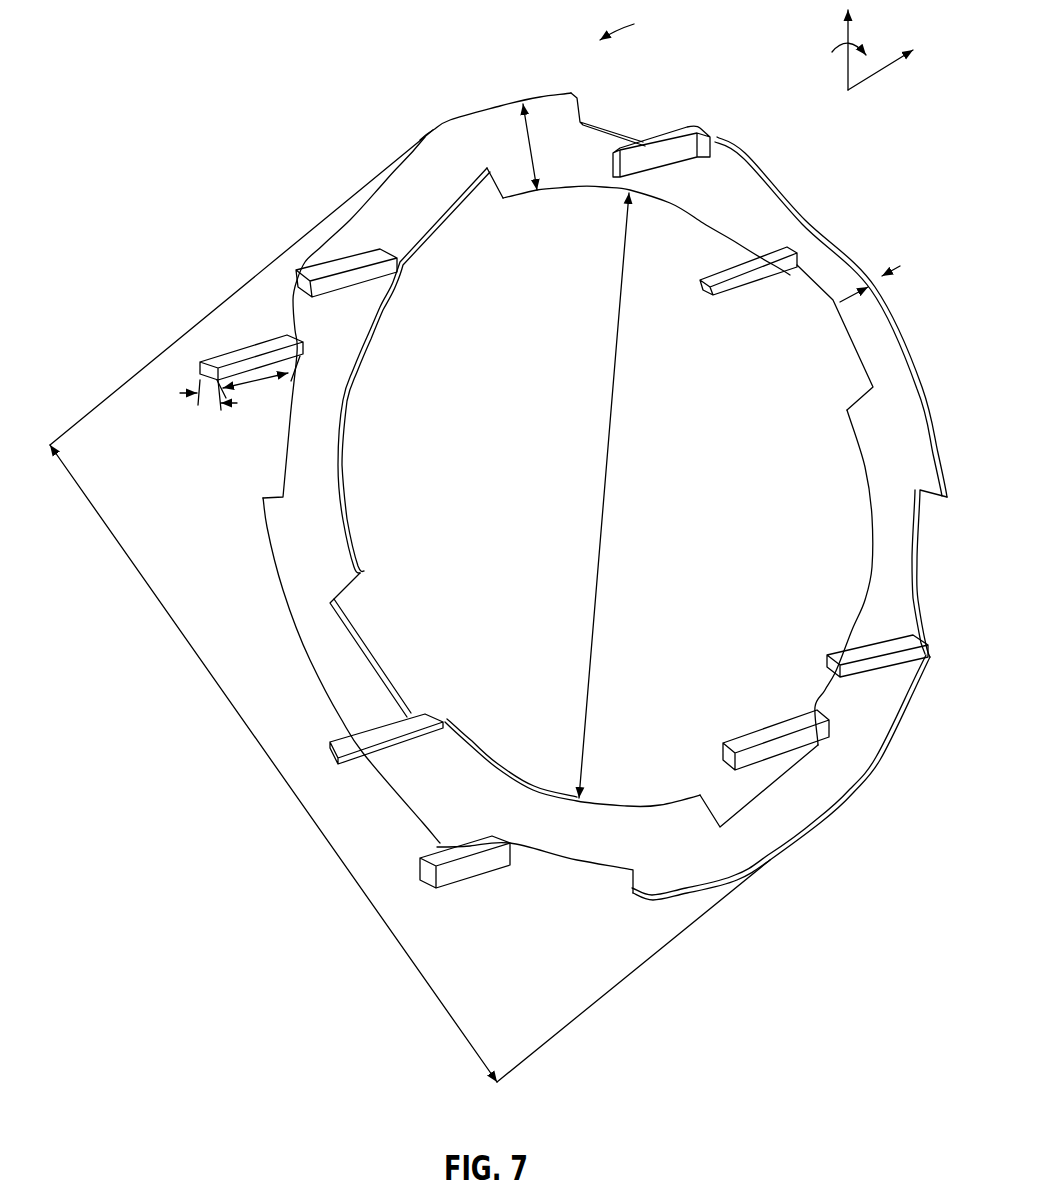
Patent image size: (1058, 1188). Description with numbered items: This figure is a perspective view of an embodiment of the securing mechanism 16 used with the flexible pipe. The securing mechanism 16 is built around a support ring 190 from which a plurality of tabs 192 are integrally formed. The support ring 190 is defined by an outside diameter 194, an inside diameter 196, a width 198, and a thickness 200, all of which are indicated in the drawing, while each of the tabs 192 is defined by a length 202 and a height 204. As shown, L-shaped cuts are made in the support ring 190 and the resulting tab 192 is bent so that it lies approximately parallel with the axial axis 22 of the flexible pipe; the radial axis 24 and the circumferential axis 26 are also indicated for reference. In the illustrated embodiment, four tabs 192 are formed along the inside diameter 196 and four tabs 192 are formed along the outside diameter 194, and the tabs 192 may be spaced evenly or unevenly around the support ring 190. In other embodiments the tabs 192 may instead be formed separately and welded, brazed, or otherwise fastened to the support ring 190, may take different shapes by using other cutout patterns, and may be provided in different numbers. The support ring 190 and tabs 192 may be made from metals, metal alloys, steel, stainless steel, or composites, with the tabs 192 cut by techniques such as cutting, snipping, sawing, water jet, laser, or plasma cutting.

The securing mechanism 16 is at (633, 22).
The axial axis 22 is at (882, 73).
The radial axis 24 is at (848, 68).
The circumferential axis 26 is at (860, 43).
The support ring 190 is at (400, 160).
The tabs 192 is at (733, 297).
The outside diameter 194 is at (190, 647).
The inside diameter 196 is at (613, 502).
The width 198 is at (522, 145).
The thickness 200 is at (897, 272).
The length 202 is at (262, 385).
The height 204 is at (206, 400).